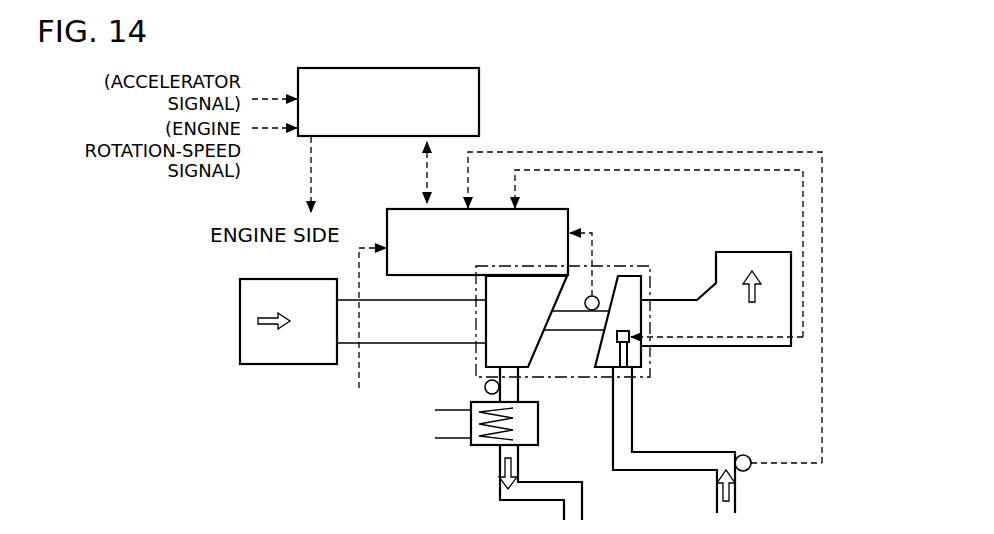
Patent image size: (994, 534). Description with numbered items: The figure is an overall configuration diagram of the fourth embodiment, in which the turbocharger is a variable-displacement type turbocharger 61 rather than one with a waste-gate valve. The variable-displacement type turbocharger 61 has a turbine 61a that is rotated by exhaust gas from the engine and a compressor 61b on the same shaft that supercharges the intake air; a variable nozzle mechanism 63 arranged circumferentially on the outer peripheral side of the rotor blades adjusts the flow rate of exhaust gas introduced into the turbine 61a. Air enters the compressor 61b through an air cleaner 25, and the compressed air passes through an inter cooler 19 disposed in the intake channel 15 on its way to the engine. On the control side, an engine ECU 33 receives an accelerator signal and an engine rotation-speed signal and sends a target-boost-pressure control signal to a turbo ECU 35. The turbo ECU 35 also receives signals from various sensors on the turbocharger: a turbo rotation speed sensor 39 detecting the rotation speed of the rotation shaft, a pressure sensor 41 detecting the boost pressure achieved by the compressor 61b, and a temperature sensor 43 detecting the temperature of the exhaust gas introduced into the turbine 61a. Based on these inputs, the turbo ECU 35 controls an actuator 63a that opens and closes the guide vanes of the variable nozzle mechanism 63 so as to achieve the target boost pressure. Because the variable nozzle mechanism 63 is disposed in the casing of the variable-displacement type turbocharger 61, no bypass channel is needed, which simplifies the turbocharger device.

The intake channel 15 is at (538, 500).
The inter cooler 19 is at (489, 446).
The air cleaner 25 is at (302, 364).
The engine ECU 33 is at (480, 101).
The turbo ECU 35 is at (569, 219).
The turbo rotation speed sensor 39 is at (594, 296).
The pressure sensor 41 is at (484, 388).
The temperature sensor 43 is at (748, 472).
The variable-displacement type turbocharger 61 is at (558, 343).
The turbine 61a is at (643, 286).
The compressor 61b is at (484, 322).
The variable nozzle mechanism 63 is at (628, 355).
The actuator 63a is at (628, 330).